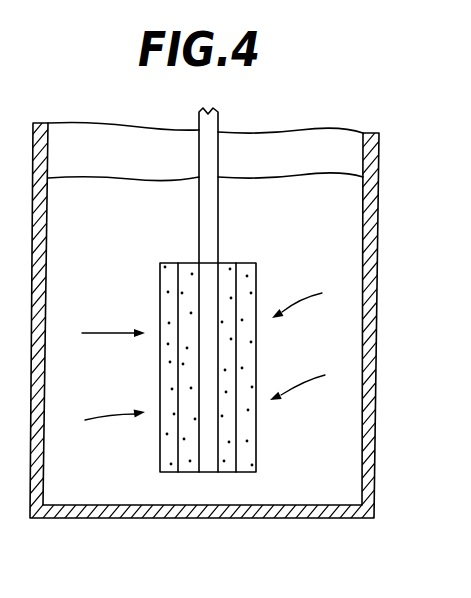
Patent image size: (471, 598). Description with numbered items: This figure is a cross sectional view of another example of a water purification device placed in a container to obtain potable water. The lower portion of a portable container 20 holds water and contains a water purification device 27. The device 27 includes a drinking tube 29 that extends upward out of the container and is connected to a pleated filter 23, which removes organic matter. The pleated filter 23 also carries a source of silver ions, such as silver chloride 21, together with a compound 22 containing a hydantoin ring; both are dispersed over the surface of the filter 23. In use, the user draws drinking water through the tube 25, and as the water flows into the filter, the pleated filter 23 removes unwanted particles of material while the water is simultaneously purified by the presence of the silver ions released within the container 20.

The lower portion of a portable container 20 is at (377, 302).
The silver chloride 21 is at (253, 472).
The compound containing a hydantoin ring 22 is at (188, 451).
The pleated filter 23 is at (215, 472).
The tube 25 is at (131, 242).
The water purification device 27 is at (266, 254).
The drinking tube 29 is at (213, 111).